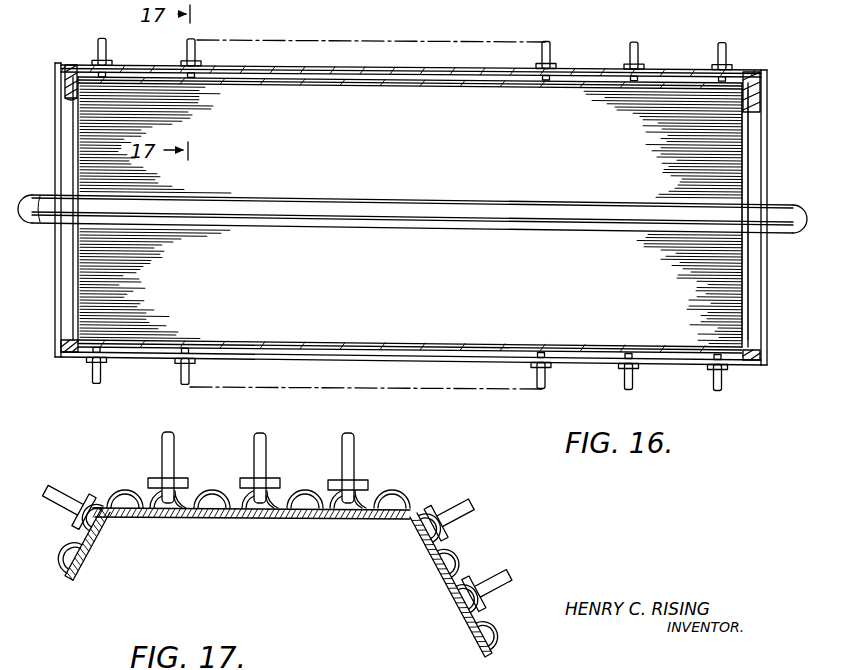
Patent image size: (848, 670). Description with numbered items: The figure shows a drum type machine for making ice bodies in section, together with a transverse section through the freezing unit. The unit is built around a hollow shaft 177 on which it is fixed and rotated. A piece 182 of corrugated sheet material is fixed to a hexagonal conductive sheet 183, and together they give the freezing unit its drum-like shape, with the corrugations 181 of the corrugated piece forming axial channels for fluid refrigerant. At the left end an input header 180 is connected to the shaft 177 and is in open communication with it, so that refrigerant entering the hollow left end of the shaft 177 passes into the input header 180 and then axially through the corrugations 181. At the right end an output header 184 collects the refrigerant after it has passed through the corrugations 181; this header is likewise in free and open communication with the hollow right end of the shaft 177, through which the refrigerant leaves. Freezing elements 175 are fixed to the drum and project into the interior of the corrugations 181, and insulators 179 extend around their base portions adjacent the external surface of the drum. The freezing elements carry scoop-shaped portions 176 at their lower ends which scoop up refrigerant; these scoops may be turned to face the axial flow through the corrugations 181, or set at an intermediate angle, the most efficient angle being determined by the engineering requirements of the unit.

In FIG. 16, the freezing elements 175 is at (102, 37).
In FIG. 17, the freezing elements 175 is at (452, 504).
In FIG. 17, the scoop-shaped portions 176 is at (80, 521).
In FIG. 16, the shaft 177 is at (385, 196).
In FIG. 16, the insulators 179 is at (93, 61).
In FIG. 17, the insulators 179 is at (510, 578).
In FIG. 16, the input header 180 is at (72, 286).
In FIG. 16, the corrugations 181 is at (487, 70).
In FIG. 17, the corrugations 181 is at (150, 492).
In FIG. 16, the piece of corrugated sheet material 182 is at (405, 66).
In FIG. 17, the piece of corrugated sheet material 182 is at (110, 487).
In FIG. 17, the hexagonal conductive sheet 183 is at (305, 521).
In FIG. 16, the output header 184 is at (748, 263).